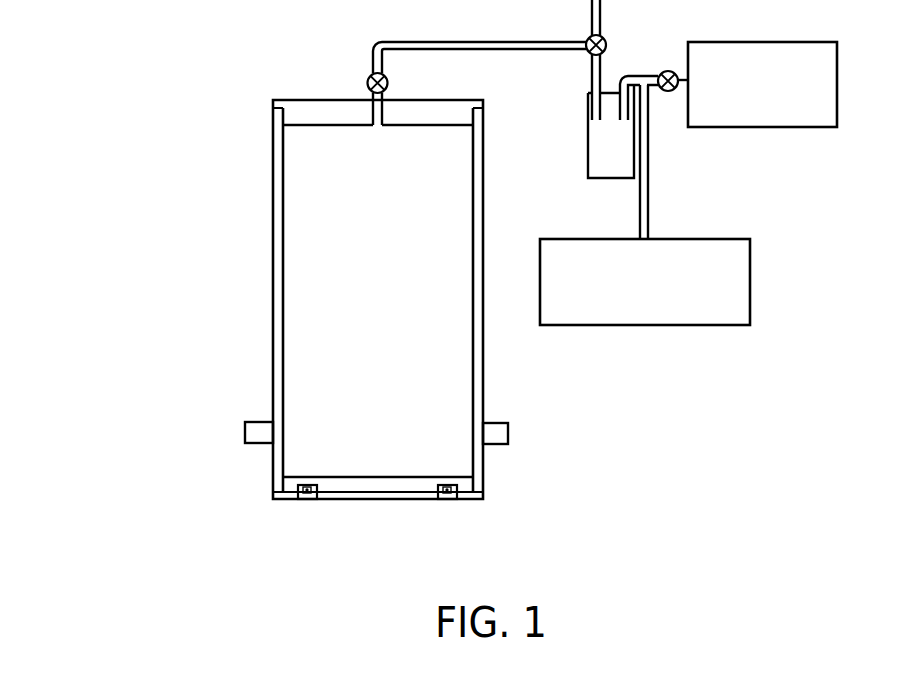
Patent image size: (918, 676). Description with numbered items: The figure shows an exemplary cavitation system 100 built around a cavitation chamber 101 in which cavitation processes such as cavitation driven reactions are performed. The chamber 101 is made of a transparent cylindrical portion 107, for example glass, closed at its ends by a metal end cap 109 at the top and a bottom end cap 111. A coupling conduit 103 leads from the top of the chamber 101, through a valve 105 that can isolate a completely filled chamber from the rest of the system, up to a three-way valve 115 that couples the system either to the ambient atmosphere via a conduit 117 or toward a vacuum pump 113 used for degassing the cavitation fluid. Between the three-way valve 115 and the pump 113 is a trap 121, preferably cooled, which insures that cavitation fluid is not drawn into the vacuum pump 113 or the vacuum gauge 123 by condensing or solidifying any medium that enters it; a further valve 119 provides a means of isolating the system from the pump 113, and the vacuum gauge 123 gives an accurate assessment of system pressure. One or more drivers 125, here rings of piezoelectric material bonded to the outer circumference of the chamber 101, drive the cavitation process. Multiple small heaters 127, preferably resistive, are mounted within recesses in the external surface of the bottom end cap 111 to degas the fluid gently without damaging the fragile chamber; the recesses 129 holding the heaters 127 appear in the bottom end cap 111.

The system 100 is at (208, 373).
The cavitation chamber 101 is at (398, 306).
The coupling conduit 103 is at (371, 68).
The valve 105 is at (389, 83).
The cylindrical portion 107 is at (273, 212).
The end cap 109 is at (325, 110).
The bottom end cap 111 is at (410, 495).
The vacuum pump 113 is at (755, 42).
The three-way valve 115 is at (588, 38).
The conduit 117 is at (600, 14).
The valve 119 is at (666, 92).
The trap 121 is at (587, 131).
The vacuum gauge 123 is at (750, 283).
The drivers 125 is at (259, 432).
The heaters 127 is at (307, 500).
The seals 129 is at (432, 496).